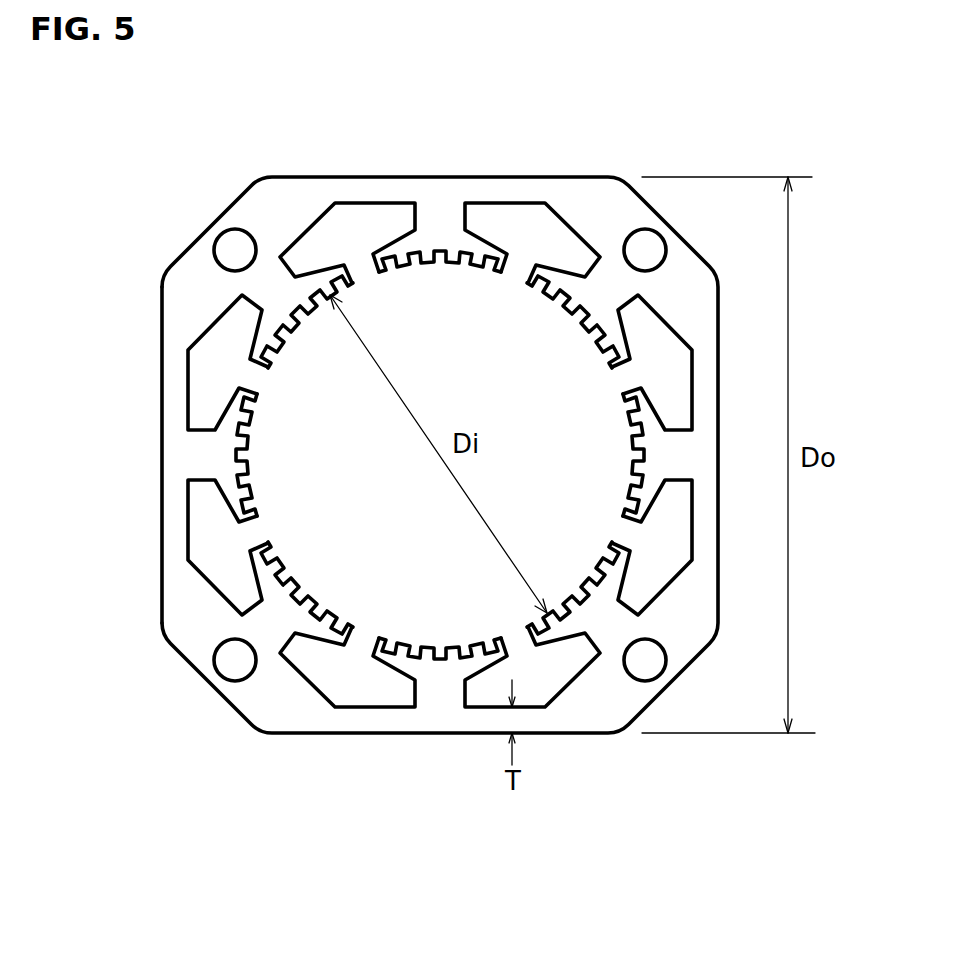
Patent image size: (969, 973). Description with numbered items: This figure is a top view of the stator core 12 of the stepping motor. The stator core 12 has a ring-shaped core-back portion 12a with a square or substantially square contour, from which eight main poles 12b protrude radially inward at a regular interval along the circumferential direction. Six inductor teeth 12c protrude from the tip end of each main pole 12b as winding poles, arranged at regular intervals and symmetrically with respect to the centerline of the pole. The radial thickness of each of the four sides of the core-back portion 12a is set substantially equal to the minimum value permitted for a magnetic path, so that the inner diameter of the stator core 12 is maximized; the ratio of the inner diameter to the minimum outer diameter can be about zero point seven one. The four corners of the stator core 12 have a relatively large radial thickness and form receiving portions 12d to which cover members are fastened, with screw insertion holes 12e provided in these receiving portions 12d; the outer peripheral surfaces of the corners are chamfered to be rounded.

The stator core 12 is at (160, 300).
The core-back portion 12a is at (173, 518).
The main pole 12b is at (423, 220).
The inductor tooth 12c is at (527, 306).
The receiving portion 12d is at (603, 212).
The screw insertion hole 12e is at (247, 667).